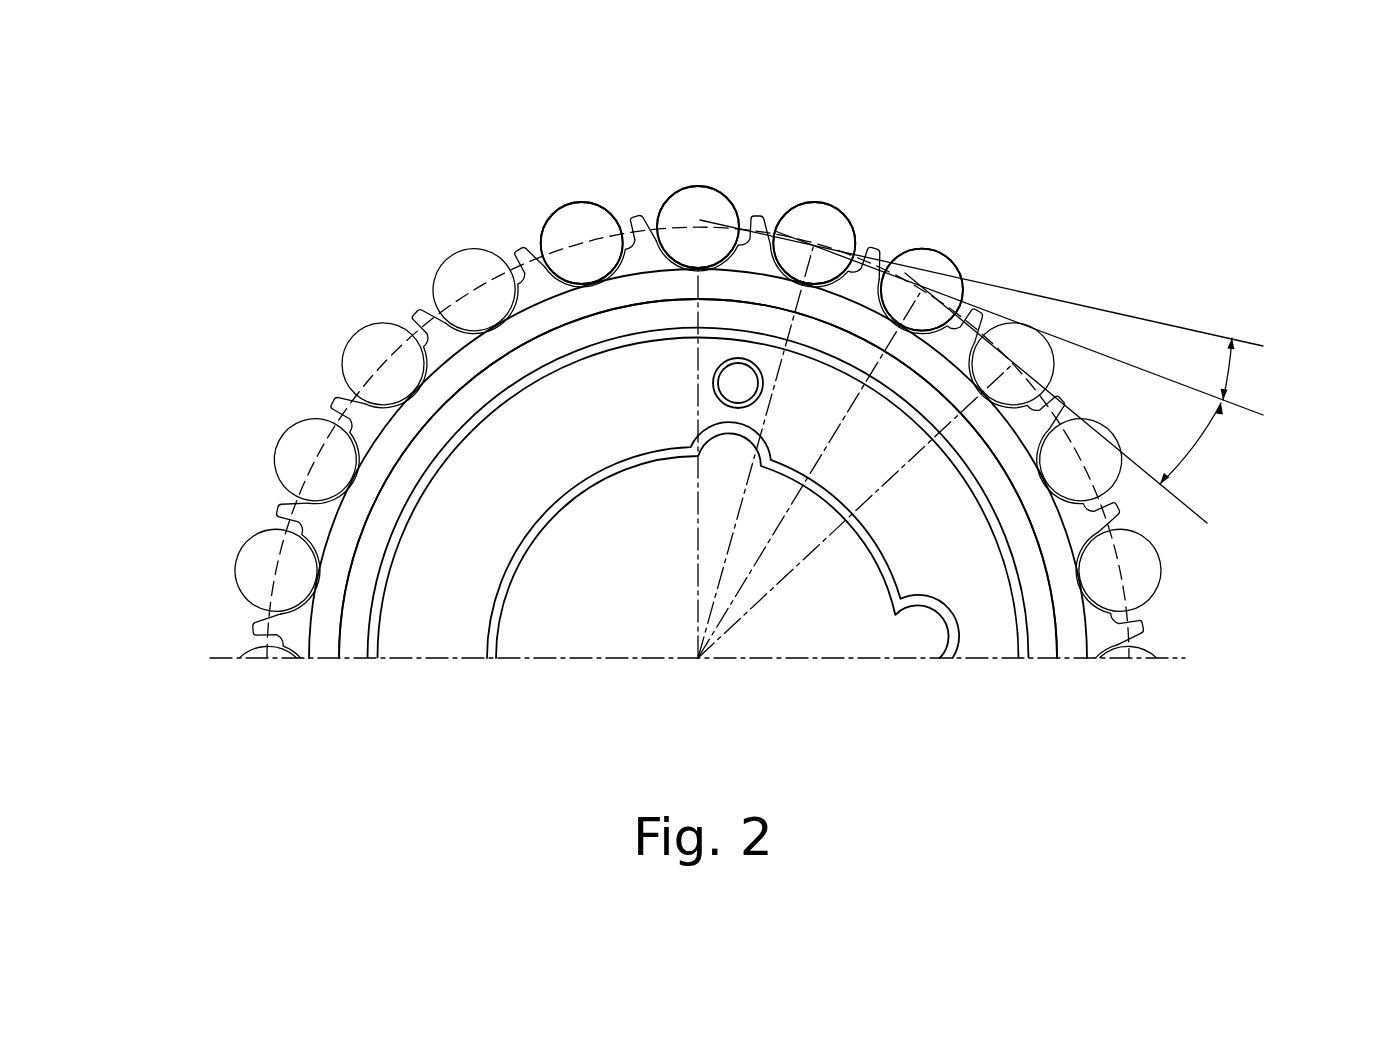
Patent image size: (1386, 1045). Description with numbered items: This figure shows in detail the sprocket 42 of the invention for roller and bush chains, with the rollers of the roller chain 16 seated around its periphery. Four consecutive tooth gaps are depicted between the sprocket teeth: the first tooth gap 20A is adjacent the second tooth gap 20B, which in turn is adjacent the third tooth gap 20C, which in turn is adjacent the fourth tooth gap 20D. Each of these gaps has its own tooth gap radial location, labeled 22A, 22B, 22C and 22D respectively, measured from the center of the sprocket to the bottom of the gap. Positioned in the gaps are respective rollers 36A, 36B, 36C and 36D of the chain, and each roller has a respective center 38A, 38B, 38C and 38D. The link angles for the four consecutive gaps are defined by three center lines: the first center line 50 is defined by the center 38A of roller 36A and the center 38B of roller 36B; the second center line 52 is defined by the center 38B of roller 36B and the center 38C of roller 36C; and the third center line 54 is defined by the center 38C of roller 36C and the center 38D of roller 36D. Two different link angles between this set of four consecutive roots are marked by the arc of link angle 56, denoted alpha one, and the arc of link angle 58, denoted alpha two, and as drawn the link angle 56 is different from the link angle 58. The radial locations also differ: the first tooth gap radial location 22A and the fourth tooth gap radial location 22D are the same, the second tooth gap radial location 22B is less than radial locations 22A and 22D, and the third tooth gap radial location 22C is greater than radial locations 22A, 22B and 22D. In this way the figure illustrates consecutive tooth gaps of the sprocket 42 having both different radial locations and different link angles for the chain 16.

The roller chain 16 is at (249, 520).
The first tooth gap 20A is at (665, 255).
The second tooth gap 20B is at (763, 253).
The third tooth gap 20C is at (893, 303).
The fourth tooth gap 20D is at (962, 392).
The first tooth gap radial location 22A is at (693, 493).
The second tooth gap radial location 22B is at (718, 567).
The third tooth gap radial location 22C is at (787, 520).
The fourth tooth gap radial location 22D is at (903, 472).
The first roller 36A is at (557, 207).
The second roller 36B is at (683, 188).
The third roller 36C is at (820, 203).
The fourth roller 36D is at (920, 248).
The center of first roller 38A is at (580, 243).
The center of second roller 38B is at (697, 223).
The center of third roller 38C is at (818, 247).
The center of fourth roller 38D is at (958, 266).
The sprocket 42 is at (318, 664).
The first center line 50 is at (1163, 324).
The second center line 52 is at (1060, 336).
The third center line 54 is at (1187, 510).
The link angle α1 56 is at (1237, 366).
The link angle α2 58 is at (1203, 452).